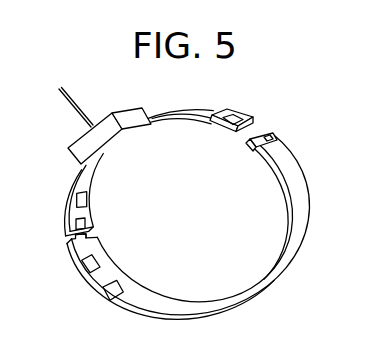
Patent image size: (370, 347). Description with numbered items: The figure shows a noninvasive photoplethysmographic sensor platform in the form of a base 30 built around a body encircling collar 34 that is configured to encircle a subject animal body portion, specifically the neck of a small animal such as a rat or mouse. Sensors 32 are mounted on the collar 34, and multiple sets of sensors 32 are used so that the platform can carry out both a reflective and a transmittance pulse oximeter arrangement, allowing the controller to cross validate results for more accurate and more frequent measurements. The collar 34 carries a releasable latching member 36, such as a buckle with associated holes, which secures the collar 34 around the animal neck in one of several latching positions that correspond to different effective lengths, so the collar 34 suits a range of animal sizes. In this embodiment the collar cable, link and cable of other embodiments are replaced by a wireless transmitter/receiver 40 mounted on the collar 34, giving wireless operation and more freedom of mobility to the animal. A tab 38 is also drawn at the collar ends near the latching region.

The base 30 is at (245, 82).
The sensors 32 is at (90, 200).
The collar 34 is at (297, 193).
The latching member 36 is at (252, 118).
The tab / notch 38 is at (86, 232).
The wireless transmitter/receiver 40 is at (113, 130).